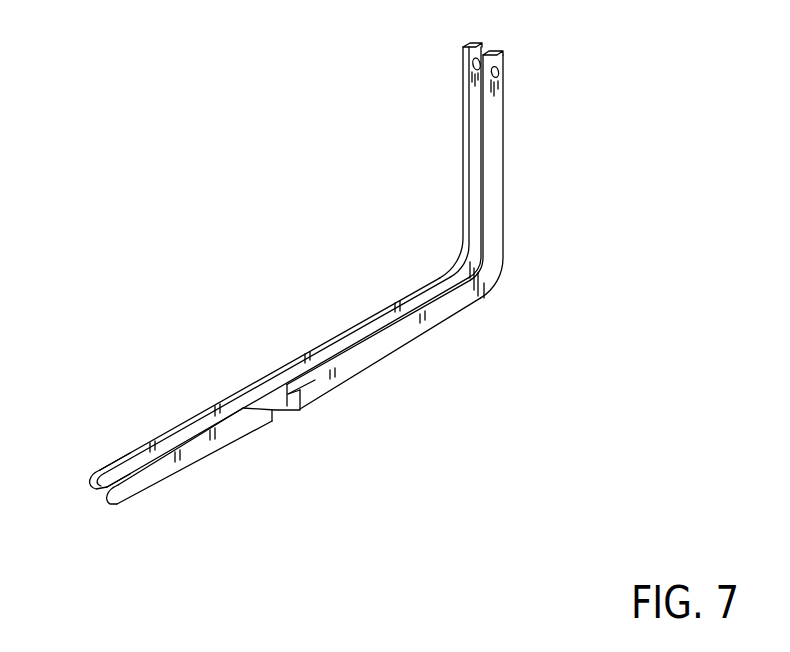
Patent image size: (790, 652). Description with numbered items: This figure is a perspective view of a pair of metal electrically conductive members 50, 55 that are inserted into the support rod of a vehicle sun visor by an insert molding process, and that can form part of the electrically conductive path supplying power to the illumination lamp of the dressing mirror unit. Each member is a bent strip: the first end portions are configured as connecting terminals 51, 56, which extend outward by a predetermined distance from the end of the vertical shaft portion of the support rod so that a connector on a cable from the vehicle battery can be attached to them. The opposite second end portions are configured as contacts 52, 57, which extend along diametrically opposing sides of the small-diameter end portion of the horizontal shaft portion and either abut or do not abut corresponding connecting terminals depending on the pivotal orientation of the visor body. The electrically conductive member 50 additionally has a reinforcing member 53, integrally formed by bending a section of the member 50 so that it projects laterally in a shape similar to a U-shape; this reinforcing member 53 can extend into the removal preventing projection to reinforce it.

The electrically conductive member 50 is at (402, 346).
The connecting terminal 51 is at (497, 100).
The contact 52 is at (140, 486).
The reinforcing member 53 is at (292, 420).
The electrically conductive member 55 is at (353, 327).
The connecting terminal 56 is at (466, 87).
The contact 57 is at (120, 462).